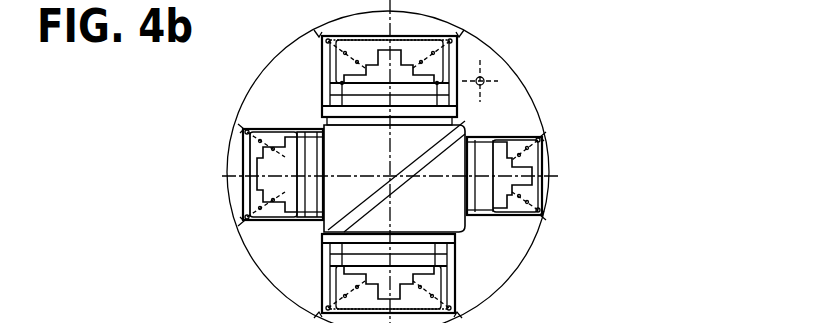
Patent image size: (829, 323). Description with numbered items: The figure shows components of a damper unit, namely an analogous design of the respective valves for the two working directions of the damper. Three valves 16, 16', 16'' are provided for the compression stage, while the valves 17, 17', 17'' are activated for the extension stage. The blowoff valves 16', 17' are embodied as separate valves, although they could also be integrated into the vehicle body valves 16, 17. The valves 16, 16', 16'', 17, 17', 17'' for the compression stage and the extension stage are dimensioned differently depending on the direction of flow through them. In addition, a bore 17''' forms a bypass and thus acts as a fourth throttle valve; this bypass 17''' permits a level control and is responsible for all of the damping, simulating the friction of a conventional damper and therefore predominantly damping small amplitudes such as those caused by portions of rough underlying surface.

The vehicle body valve 16 is at (502, 277).
The blowoff valve 16' is at (608, 176).
The valve 16'' is at (229, 276).
The vehicle body valve 17 is at (467, 58).
The blowoff valve 17' is at (211, 174).
The valve 17'' is at (220, 86).
The bore 17''' is at (589, 84).